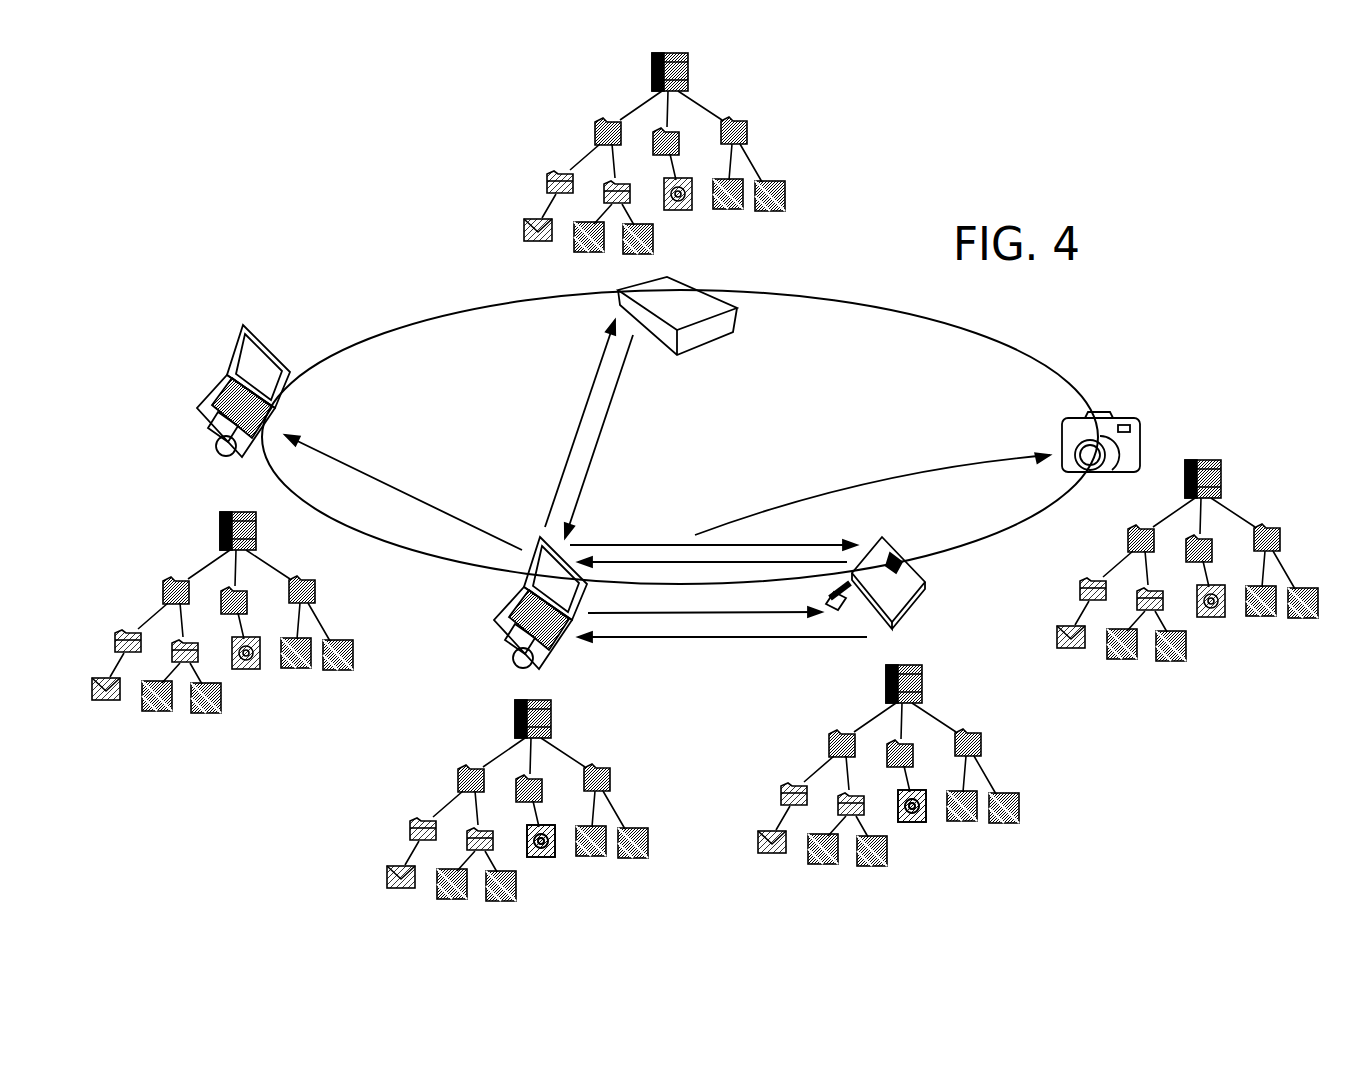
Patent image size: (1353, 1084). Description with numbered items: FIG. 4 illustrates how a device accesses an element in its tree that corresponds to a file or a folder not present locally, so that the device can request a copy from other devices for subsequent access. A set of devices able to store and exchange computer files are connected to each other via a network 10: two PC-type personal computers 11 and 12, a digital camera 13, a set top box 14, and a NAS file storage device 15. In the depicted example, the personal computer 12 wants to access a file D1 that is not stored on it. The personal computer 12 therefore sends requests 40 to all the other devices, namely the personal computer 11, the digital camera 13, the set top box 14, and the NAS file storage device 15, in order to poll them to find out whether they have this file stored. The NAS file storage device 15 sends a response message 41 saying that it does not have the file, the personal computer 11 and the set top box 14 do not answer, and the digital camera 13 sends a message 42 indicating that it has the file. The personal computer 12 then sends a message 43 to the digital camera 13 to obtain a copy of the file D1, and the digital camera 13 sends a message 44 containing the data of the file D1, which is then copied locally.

The network 10 is at (418, 320).
The personal computer 11 is at (208, 397).
The personal computer 12 is at (503, 630).
The digital camera 13 is at (922, 600).
The set top box 14 is at (1130, 420).
The NAS file storage device 15 is at (725, 335).
The requests 40 is at (460, 517).
The response message 41 is at (601, 433).
The data transmission 42 is at (650, 560).
The message 43 is at (753, 615).
The message 44 is at (780, 637).
The file D1 is at (542, 860).